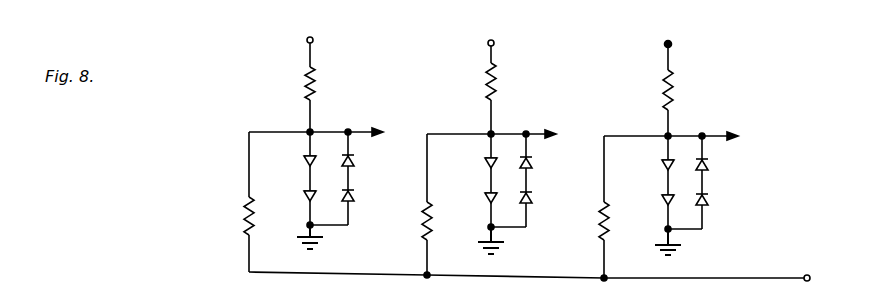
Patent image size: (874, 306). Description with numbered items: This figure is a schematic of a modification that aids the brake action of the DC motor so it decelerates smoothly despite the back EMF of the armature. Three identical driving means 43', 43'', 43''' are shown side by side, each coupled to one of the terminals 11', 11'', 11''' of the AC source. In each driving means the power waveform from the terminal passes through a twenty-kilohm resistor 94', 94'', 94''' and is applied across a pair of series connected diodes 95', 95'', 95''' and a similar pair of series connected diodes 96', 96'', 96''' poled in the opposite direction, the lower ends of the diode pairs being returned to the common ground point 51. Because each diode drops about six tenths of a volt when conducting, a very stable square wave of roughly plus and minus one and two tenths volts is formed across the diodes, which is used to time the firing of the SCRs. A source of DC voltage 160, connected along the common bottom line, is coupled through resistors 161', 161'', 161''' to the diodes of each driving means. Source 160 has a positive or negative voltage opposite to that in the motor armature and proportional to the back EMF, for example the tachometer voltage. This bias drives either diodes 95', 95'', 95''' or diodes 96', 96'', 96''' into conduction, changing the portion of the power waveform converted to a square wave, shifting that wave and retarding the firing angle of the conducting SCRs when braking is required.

The terminal 11' is at (330, 27).
The resistor 94' is at (334, 81).
The driving means 43' is at (316, 112).
The series connected diodes 95' is at (289, 184).
The series connected diodes 96' is at (368, 177).
The resistor 161' is at (212, 216).
The terminal 11'' is at (515, 40).
The resistor 94'' is at (516, 81).
The driving means 43'' is at (495, 115).
The series connected diodes 95'' is at (467, 192).
The series connected diodes 96'' is at (546, 177).
The resistor 161'' is at (392, 226).
The terminal 11''' is at (696, 40).
The resistor 94''' is at (694, 90).
The driving means 43''' is at (679, 122).
The series connected diodes 95''' is at (645, 194).
The series connected diodes 96''' is at (727, 182).
The resistor 161''' is at (570, 227).
The ground 51 is at (300, 237).
The source of DC voltage 160 is at (830, 256).